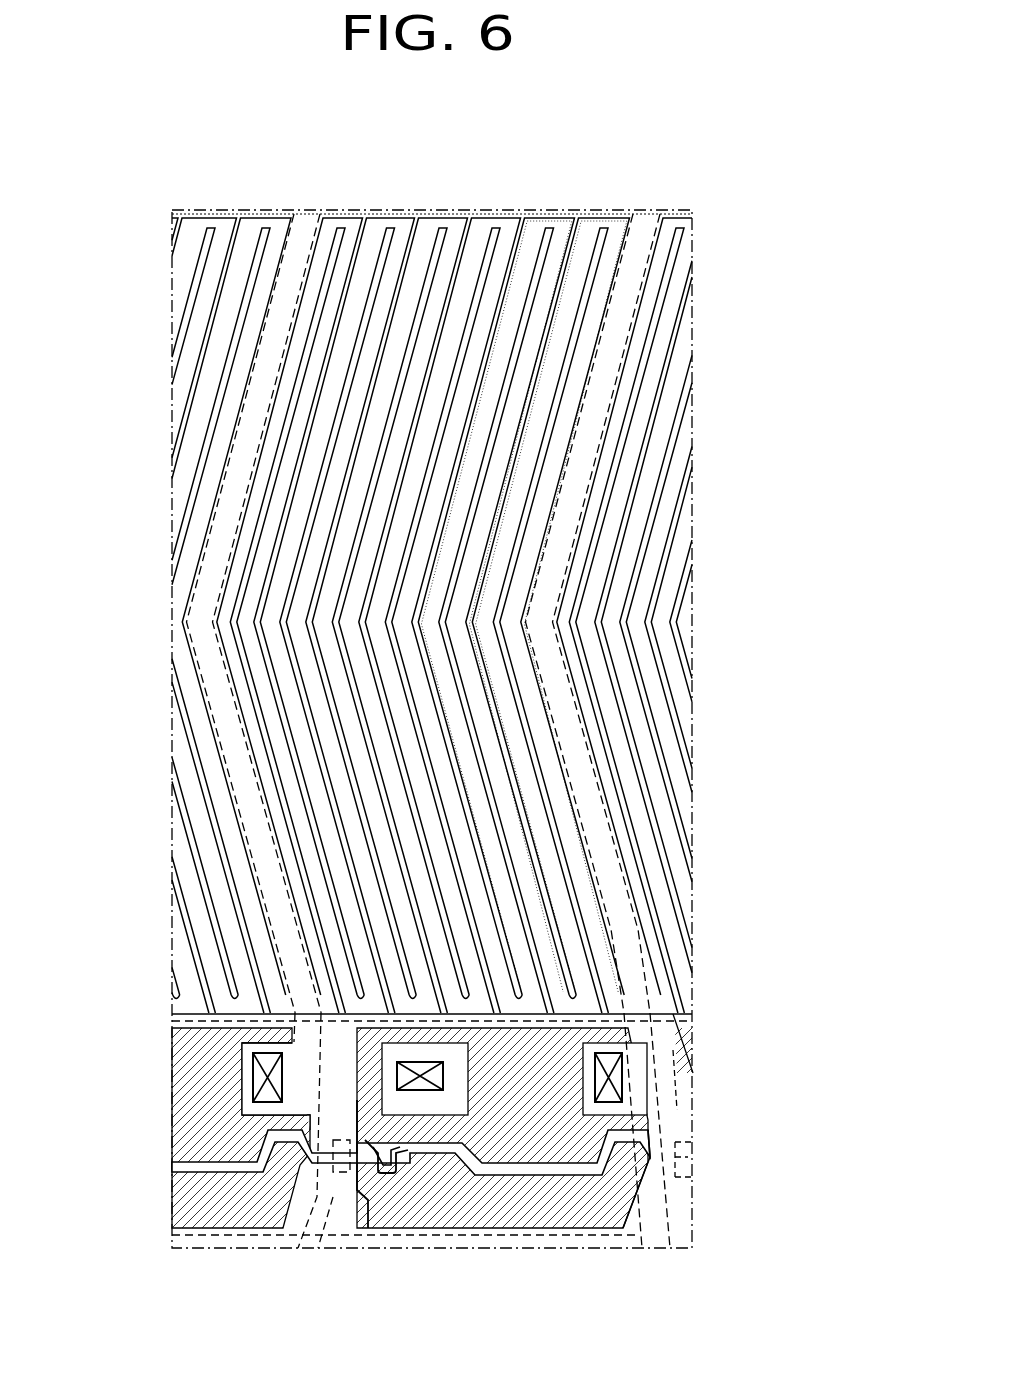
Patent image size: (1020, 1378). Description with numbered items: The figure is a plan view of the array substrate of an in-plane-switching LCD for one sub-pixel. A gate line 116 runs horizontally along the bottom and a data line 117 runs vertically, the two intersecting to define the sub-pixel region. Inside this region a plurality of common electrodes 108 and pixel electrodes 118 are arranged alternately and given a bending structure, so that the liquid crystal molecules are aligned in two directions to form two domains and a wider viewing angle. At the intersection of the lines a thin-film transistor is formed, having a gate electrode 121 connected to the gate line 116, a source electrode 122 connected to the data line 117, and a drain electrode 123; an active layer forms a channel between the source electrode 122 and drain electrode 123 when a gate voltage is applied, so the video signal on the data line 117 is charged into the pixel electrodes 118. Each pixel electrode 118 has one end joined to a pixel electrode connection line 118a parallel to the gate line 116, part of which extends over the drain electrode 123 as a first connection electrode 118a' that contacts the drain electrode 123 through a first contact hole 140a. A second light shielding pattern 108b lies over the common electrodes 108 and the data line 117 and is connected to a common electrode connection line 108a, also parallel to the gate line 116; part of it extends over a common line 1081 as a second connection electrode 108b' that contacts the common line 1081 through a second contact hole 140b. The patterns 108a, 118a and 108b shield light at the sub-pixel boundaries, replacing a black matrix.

The common electrode 108 is at (520, 803).
The pixel electrode 118 is at (500, 832).
The data line 117 is at (233, 786).
The second light shielding pattern 108b is at (653, 613).
The pixel electrode connection line 118a is at (476, 999).
The first connection electrode 118a' is at (190, 1038).
The first contact hole 140a is at (262, 1085).
The second contact hole 140b is at (618, 1080).
The second connection electrode 108b' is at (695, 1130).
The source electrode 122 is at (382, 1193).
The gate electrode 121 is at (400, 1193).
The drain electrode 123 is at (440, 1143).
The common electrode connection line 108a is at (493, 1240).
The gate line 116 is at (542, 1218).
The common line 1081 is at (583, 1157).